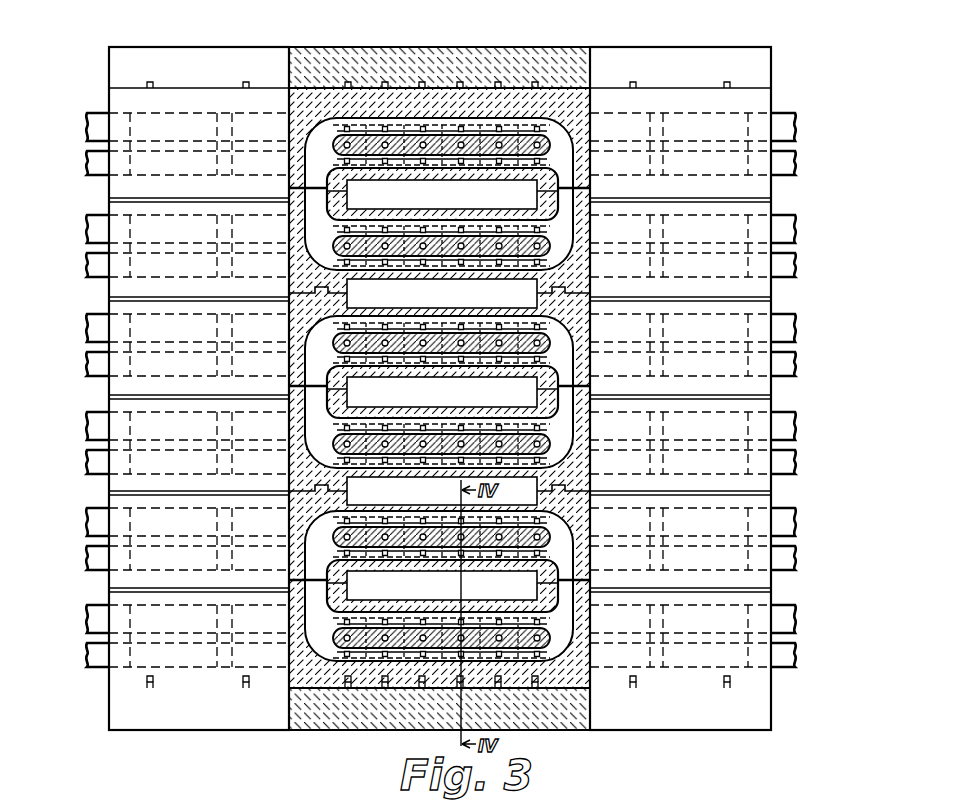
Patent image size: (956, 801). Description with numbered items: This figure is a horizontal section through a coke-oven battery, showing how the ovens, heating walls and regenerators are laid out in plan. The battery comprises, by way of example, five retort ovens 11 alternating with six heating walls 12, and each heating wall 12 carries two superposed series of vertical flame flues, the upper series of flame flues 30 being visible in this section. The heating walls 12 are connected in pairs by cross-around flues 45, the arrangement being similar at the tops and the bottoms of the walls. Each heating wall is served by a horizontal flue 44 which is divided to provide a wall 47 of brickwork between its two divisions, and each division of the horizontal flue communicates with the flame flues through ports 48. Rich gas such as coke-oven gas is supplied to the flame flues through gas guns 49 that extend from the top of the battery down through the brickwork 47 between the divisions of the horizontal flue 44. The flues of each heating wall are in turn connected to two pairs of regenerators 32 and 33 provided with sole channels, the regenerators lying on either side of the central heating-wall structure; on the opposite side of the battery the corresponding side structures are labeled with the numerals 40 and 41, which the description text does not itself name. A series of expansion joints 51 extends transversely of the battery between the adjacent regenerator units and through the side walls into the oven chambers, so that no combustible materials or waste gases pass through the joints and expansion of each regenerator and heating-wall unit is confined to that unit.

The retort oven 11 is at (442, 390).
The heating wall 12 is at (508, 210).
The upper series of vertical flame flues 30 is at (428, 460).
The regenerators 32 is at (162, 156).
The regenerators 33 is at (246, 137).
The right side plate 40 is at (744, 166).
The right dashed frame members 41 is at (631, 163).
The horizontal flue 44 is at (412, 642).
The cross-around flue 45 is at (557, 627).
The wall of brickwork 47 is at (356, 628).
The port 48 is at (425, 262).
The gas gun 49 is at (243, 800).
The expansion joint 51 is at (762, 198).